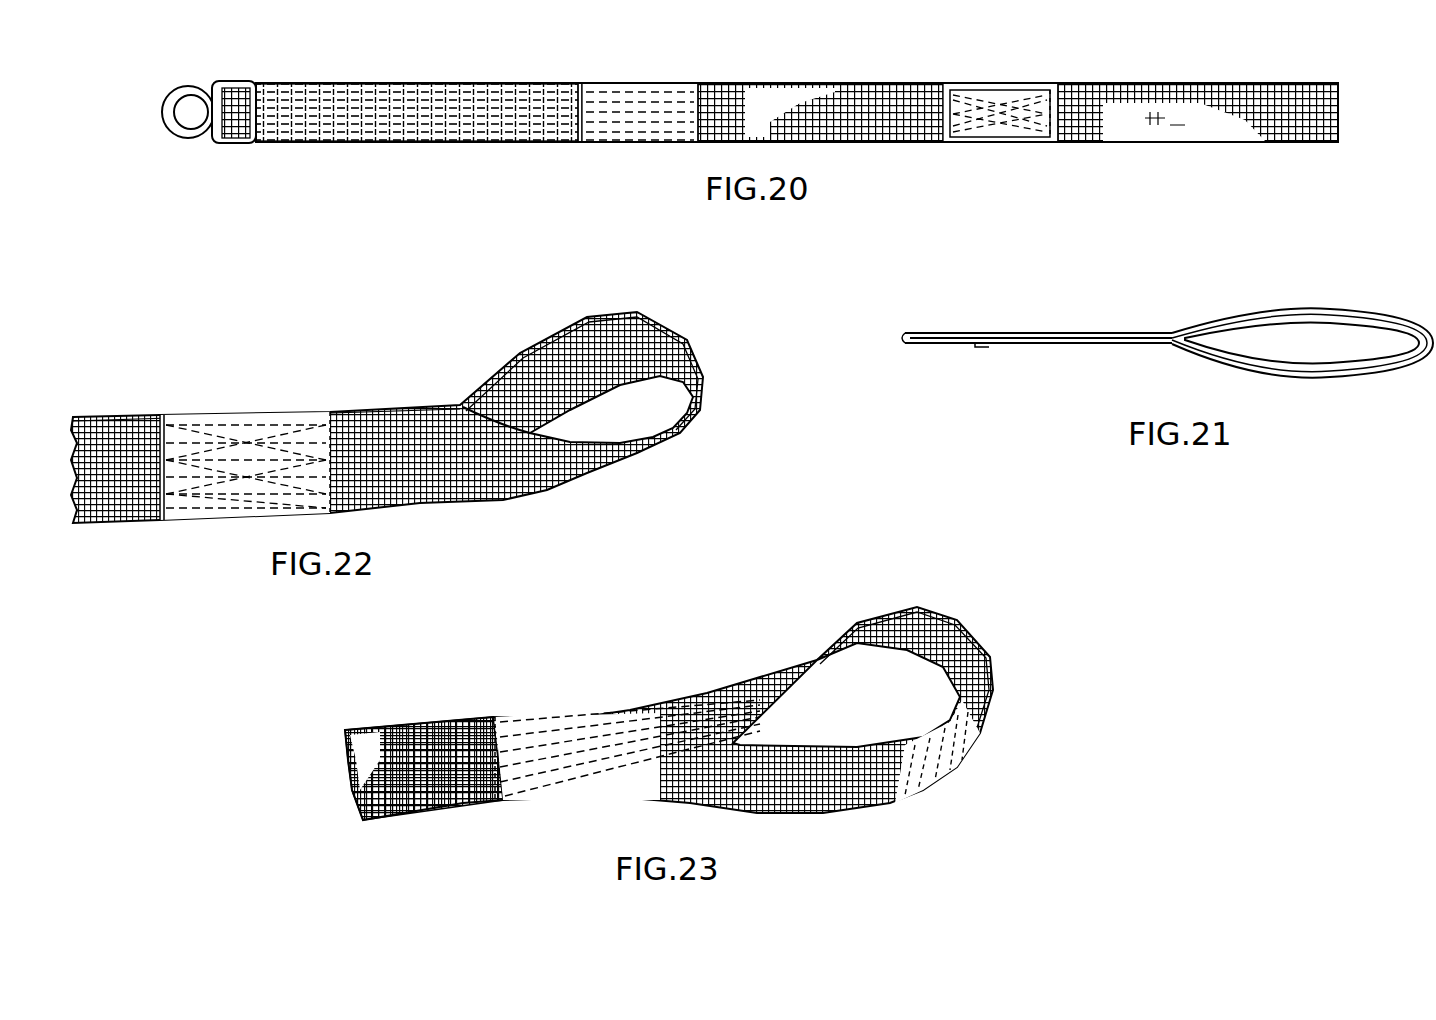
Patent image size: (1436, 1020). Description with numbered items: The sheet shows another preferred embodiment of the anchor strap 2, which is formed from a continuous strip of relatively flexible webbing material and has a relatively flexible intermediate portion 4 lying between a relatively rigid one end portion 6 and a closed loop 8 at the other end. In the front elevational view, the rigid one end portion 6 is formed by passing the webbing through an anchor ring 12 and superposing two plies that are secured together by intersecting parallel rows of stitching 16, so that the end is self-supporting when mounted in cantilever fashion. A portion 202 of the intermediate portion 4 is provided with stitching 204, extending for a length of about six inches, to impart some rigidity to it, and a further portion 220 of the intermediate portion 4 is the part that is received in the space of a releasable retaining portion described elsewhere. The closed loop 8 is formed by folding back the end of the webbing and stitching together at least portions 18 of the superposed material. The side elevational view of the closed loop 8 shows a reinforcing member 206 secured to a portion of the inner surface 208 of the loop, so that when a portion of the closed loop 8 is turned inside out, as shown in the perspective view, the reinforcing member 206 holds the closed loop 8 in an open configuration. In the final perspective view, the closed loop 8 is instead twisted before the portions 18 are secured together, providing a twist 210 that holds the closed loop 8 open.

In FIG. 20, the anchor strap 2 is at (731, 126).
In FIG. 20, the relatively flexible intermediate portion 4 is at (750, 81).
In FIG. 20, the relatively rigid one end portion 6 is at (362, 83).
In FIG. 20, the closed loop 8 is at (1210, 92).
In FIG. 21, the closed loop 8 is at (1167, 344).
In FIG. 22, the closed loop 8 is at (419, 435).
In FIG. 23, the closed loop 8 is at (691, 728).
In FIG. 20, the anchor ring 12 is at (190, 85).
In FIG. 20, the intersecting parallel rows of stitching 16 is at (283, 93).
In FIG. 20, the superposed portions 18 is at (1037, 98).
In FIG. 21, the superposed portions 18 is at (1050, 335).
In FIG. 22, the superposed portions 18 is at (187, 507).
In FIG. 23, the superposed portions 18 is at (394, 798).
In FIG. 20, the portion of the relatively flexible intermediate portion 202 is at (672, 82).
In FIG. 20, the stitching 204 is at (617, 100).
In FIG. 21, the reinforcing member 206 is at (1387, 330).
In FIG. 22, the reinforcing member 206 is at (673, 437).
In FIG. 21, the inner surface of the closed loop 208 is at (1355, 372).
In FIG. 23, the twist 210 is at (790, 662).
In FIG. 20, the portion of the relatively flexible intermediate portion 220 is at (937, 83).